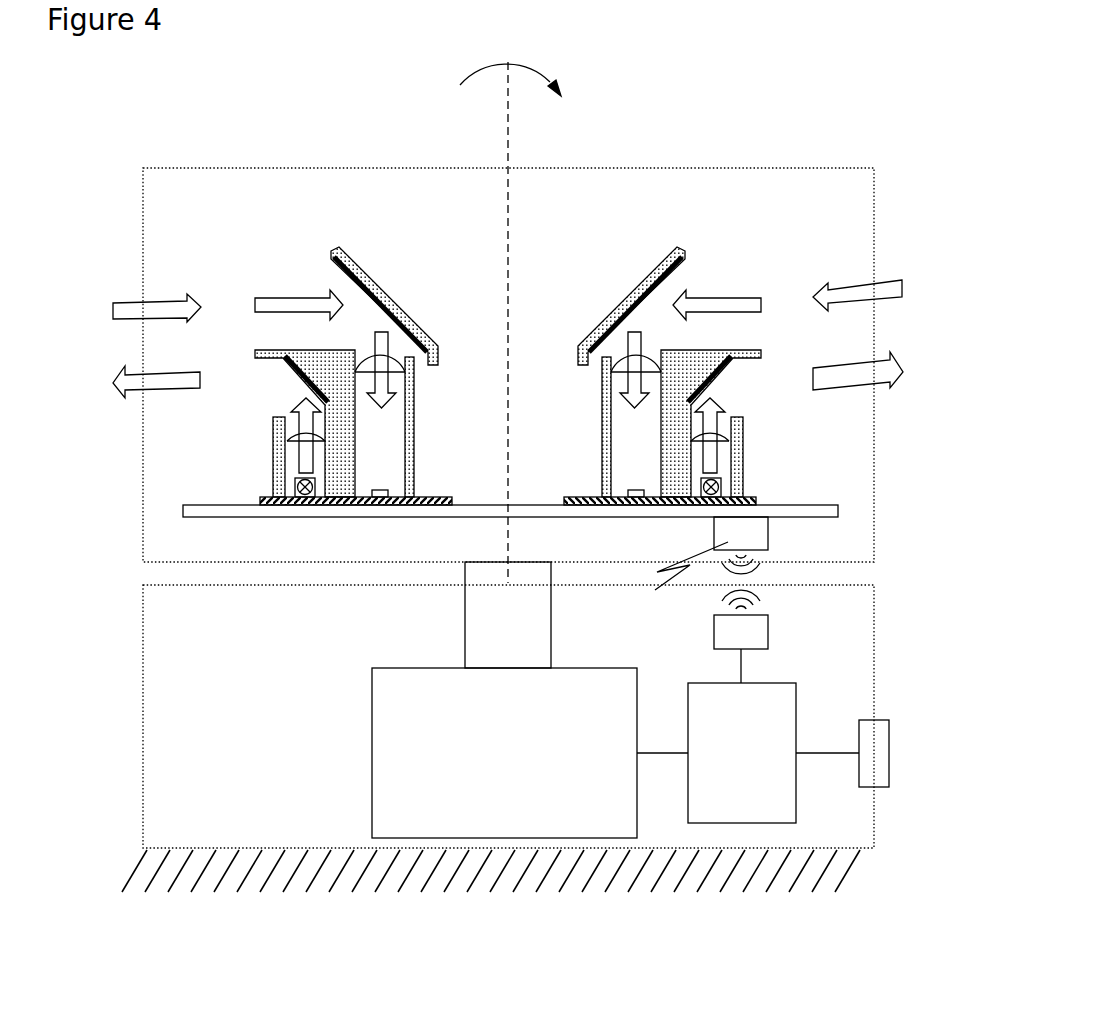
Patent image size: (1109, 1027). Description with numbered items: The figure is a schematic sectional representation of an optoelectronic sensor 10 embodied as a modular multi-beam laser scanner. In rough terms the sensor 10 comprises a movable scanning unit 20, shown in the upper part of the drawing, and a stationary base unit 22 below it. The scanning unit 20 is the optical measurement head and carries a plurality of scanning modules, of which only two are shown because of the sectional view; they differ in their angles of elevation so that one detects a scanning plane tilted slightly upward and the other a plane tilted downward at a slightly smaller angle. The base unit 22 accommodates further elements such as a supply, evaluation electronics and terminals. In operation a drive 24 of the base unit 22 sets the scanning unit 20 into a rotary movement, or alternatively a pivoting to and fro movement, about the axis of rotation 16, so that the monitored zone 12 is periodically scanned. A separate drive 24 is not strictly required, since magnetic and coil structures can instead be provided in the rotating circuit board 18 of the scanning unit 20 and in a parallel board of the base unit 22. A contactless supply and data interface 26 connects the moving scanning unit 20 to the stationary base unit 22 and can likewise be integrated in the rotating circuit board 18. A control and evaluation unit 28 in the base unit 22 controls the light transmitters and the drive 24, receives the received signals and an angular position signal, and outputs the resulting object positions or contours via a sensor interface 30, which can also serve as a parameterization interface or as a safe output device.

The optoelectronic sensor 10 is at (469, 217).
The monitored zone 12 is at (880, 233).
The axis of rotation 16 is at (495, 322).
The rotating circuit board 18 is at (830, 512).
The scanning unit 20 is at (472, 321).
The base unit 22 is at (472, 738).
The drive 24 is at (423, 769).
The supply and data interface 26 is at (695, 602).
The control and evaluation unit 28 is at (748, 746).
The sensor interface 30 is at (901, 777).